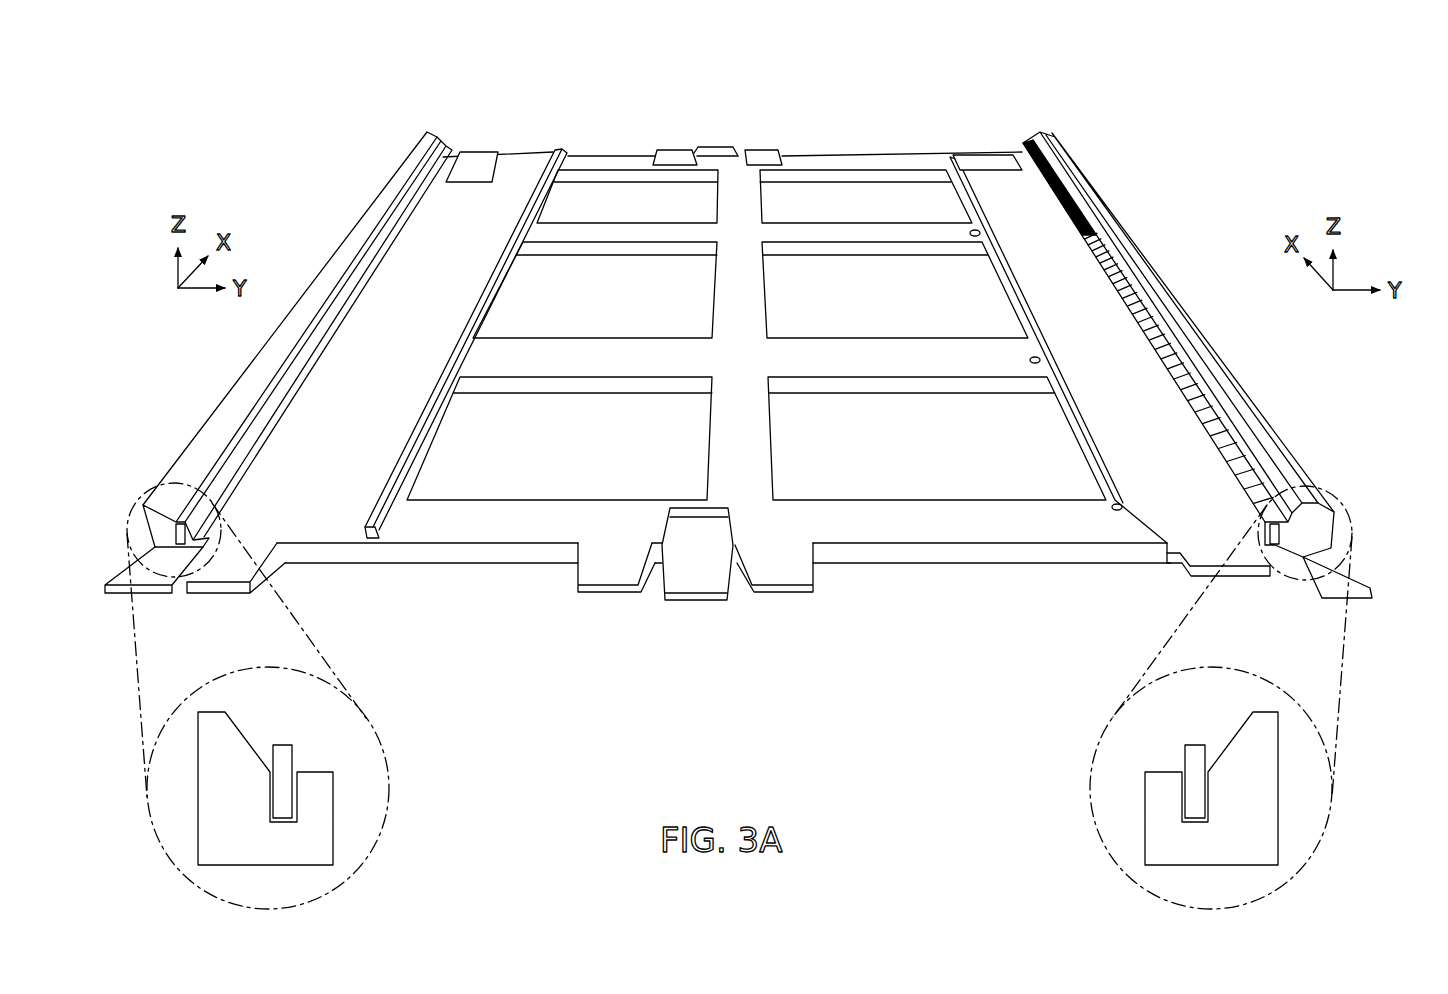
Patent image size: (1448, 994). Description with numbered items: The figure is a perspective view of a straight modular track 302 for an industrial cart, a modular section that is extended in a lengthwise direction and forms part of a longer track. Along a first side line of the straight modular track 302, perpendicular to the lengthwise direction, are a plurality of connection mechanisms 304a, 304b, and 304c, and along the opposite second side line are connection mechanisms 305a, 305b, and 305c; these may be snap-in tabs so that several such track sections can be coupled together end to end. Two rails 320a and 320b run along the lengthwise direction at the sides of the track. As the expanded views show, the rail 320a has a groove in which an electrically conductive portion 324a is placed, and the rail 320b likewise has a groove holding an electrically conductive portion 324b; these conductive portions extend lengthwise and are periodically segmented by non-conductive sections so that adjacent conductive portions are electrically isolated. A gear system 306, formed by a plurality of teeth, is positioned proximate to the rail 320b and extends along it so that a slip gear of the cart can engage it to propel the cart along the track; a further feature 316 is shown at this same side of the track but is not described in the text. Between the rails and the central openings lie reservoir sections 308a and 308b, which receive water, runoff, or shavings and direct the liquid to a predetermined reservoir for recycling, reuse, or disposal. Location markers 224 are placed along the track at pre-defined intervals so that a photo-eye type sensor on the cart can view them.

The straight modular track 302 is at (1185, 115).
The connection mechanism 304a is at (506, 136).
The connection mechanism 304b is at (758, 136).
The connection mechanism 304c is at (1009, 144).
The connection mechanism 305a is at (263, 596).
The connection mechanism 305b is at (816, 613).
The connection mechanism 305c is at (1251, 581).
The gear system 306 is at (1166, 389).
The reservoir section 308a is at (457, 301).
The reservoir section 308b is at (1100, 301).
The connector rail 316 is at (1201, 357).
The rail 320a is at (148, 560).
The rail 320b is at (1329, 563).
The electrically conductive portion 324a is at (314, 749).
The electrically conductive portion 324b is at (1168, 757).
The location marker 224 is at (975, 237).